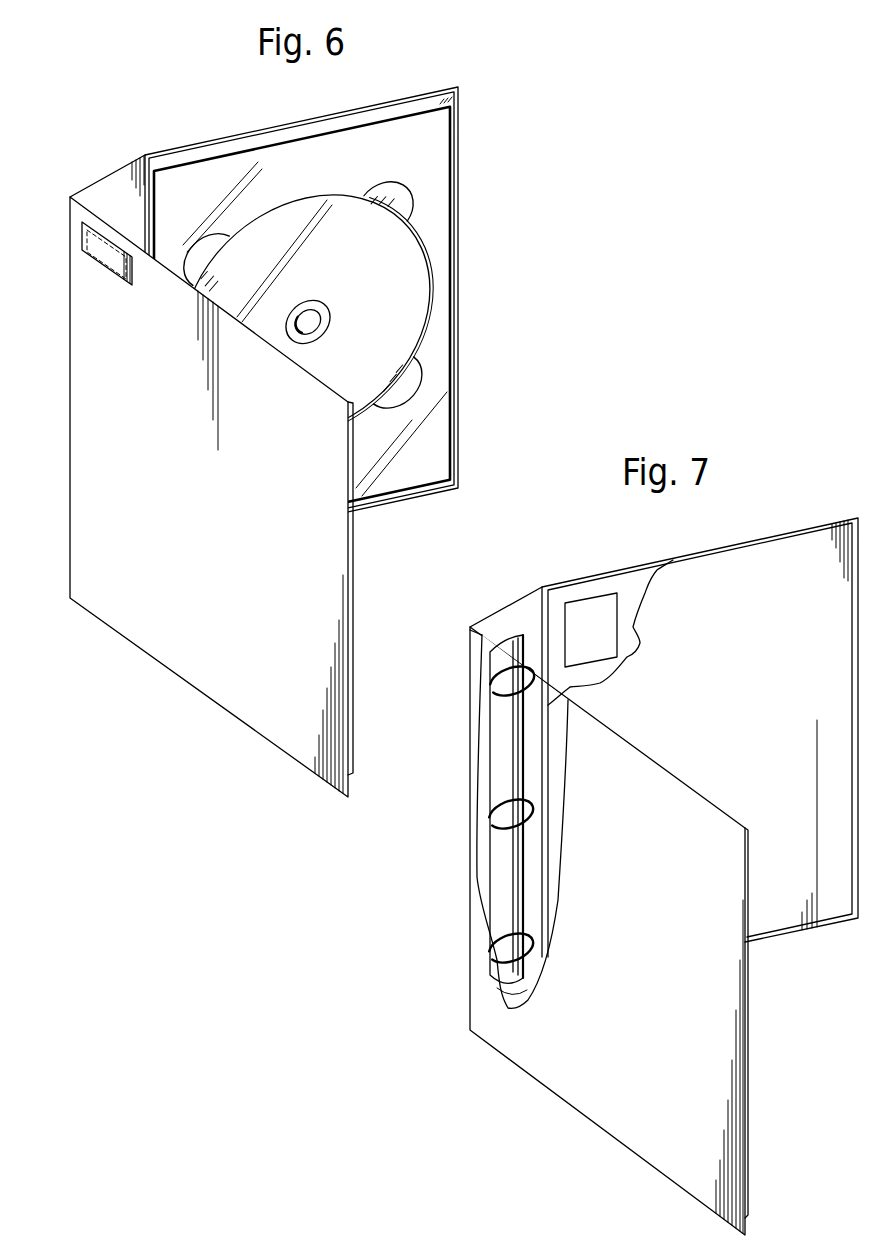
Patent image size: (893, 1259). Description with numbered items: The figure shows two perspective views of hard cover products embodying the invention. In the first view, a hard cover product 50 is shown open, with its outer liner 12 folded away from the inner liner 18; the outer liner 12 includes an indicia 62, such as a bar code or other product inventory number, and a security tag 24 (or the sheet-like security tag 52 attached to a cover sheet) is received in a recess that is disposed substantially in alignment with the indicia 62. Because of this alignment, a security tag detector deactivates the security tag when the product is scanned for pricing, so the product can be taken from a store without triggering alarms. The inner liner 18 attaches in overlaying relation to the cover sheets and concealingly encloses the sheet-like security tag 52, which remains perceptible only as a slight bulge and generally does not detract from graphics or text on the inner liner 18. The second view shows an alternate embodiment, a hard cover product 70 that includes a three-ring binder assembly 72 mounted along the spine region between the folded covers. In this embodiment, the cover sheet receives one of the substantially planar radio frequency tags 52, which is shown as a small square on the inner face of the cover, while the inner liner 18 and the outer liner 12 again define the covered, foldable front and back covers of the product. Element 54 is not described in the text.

In FIG. 6, the outer liner 12 is at (196, 541).
In FIG. 7, the outer liner 12 is at (646, 866).
In FIG. 7, the inner liner 18 is at (745, 663).
In FIG. 6, the security sensor 24 is at (112, 261).
In FIG. 6, the hard cover product 50 is at (225, 137).
In FIG. 7, the radio frequency tag 52 is at (585, 615).
In FIG. 6, the tray frame panel 54 is at (402, 152).
In FIG. 6, the indicia 62 is at (87, 217).
In FIG. 7, the hard cover product 70 is at (633, 563).
In FIG. 7, the three-ring binder assembly 72 is at (497, 762).